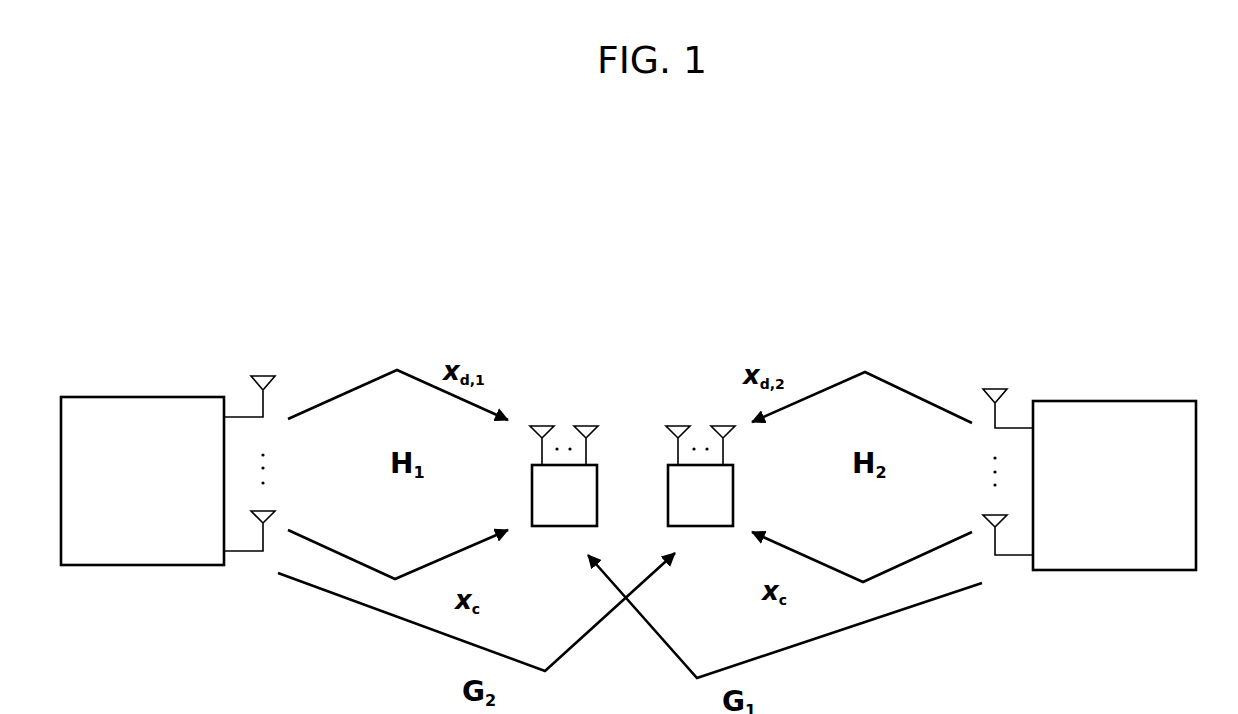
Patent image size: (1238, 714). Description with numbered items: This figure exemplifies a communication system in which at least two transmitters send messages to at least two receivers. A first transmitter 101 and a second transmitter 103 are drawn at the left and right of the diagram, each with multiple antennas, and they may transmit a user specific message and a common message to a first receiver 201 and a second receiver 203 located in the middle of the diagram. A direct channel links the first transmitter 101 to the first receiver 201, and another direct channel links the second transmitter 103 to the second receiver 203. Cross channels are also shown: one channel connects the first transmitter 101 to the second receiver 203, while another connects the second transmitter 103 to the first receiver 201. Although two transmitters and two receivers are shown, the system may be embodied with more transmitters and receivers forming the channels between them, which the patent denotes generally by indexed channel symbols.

The first transmitter 101 is at (145, 397).
The second transmitter 103 is at (1117, 401).
The first receiver 201 is at (560, 422).
The second receiver 203 is at (705, 422).